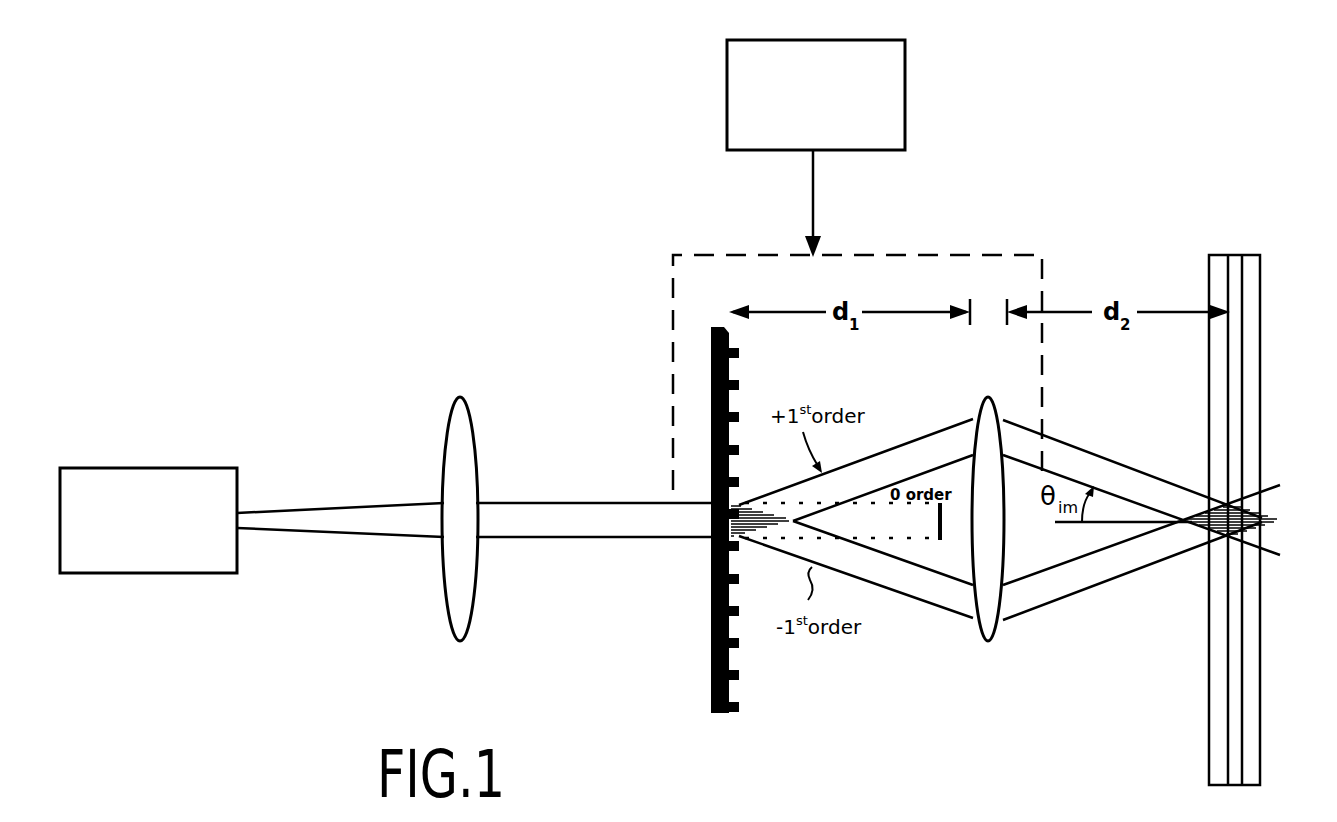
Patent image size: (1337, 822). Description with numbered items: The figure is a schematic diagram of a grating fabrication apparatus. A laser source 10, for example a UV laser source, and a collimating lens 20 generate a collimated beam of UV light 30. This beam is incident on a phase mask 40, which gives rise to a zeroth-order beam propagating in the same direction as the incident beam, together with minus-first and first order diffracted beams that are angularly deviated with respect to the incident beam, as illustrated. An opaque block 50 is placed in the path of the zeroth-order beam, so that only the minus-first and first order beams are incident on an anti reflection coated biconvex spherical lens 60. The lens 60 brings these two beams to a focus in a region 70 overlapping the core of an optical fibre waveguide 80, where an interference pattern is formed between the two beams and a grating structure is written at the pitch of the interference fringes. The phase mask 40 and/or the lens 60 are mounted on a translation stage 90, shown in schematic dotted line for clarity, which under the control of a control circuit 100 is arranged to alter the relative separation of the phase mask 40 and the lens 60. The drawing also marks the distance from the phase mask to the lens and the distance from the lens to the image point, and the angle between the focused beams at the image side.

The laser source 10 is at (240, 483).
The collimating lens 20 is at (477, 590).
The collimated beam of UV light 30 is at (510, 501).
The phase mask 40 is at (708, 645).
The opaque block 50 is at (943, 520).
The anti reflection coated biconvex spherical lens 60 is at (997, 627).
The focus region 70 is at (1265, 512).
The optical fibre waveguide 80 is at (1262, 275).
The translation stage 90 is at (990, 255).
The control circuit 100 is at (905, 93).